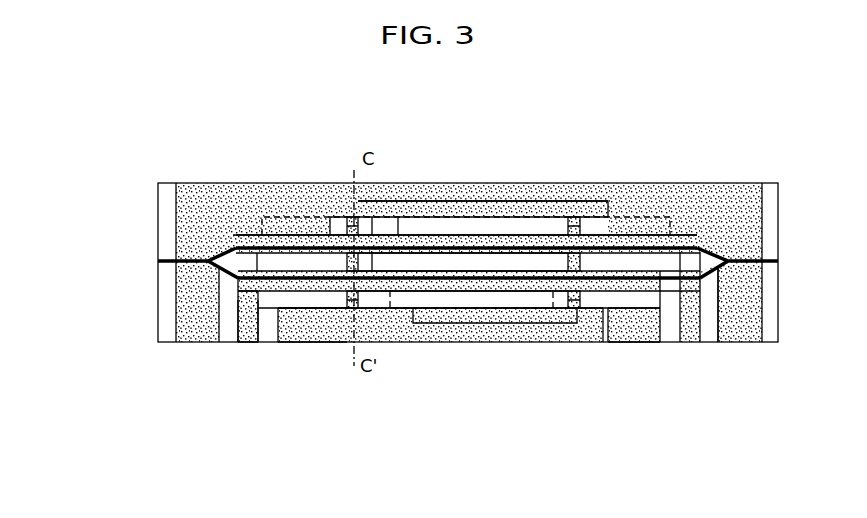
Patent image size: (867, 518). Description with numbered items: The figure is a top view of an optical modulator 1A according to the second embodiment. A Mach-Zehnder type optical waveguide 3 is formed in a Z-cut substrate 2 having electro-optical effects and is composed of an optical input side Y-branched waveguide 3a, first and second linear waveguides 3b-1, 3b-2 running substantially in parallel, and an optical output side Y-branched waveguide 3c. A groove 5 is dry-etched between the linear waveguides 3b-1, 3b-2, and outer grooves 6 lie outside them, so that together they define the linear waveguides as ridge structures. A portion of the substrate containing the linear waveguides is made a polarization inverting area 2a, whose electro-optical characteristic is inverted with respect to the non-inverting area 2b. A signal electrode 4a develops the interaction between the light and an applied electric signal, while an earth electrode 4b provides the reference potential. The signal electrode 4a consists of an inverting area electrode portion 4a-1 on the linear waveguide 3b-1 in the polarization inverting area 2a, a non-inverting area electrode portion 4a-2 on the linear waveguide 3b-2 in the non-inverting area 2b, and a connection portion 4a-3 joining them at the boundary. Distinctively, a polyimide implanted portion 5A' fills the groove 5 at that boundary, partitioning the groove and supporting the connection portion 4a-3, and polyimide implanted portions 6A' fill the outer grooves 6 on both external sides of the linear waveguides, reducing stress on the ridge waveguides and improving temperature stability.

The optical modulator 1A is at (714, 158).
The Z-cut substrate 2 is at (748, 183).
The polarization inverting area 2a is at (778, 321).
The non-inverting area 2b is at (484, 320).
The Mach-Zehnder type optical waveguide 3 is at (168, 262).
The optical input side Y-branched waveguide 3a is at (233, 246).
The first linear waveguide 3b-1 is at (250, 237).
The second linear waveguide 3b-2 is at (258, 293).
The optical output side Y-branched waveguide 3c is at (702, 246).
The signal electrode 4a is at (246, 320).
The inverting area electrode portion 4a-1 is at (259, 312).
The non-inverting area electrode portion 4a-2 is at (437, 256).
The connection portion 4a-3 is at (396, 236).
The earth electrode 4b is at (413, 326).
The groove 5 is at (440, 237).
The polyimide implanted portion 5A' is at (430, 190).
The outer grooves 6 is at (520, 232).
The polyimide implanted portions 6A' is at (478, 270).